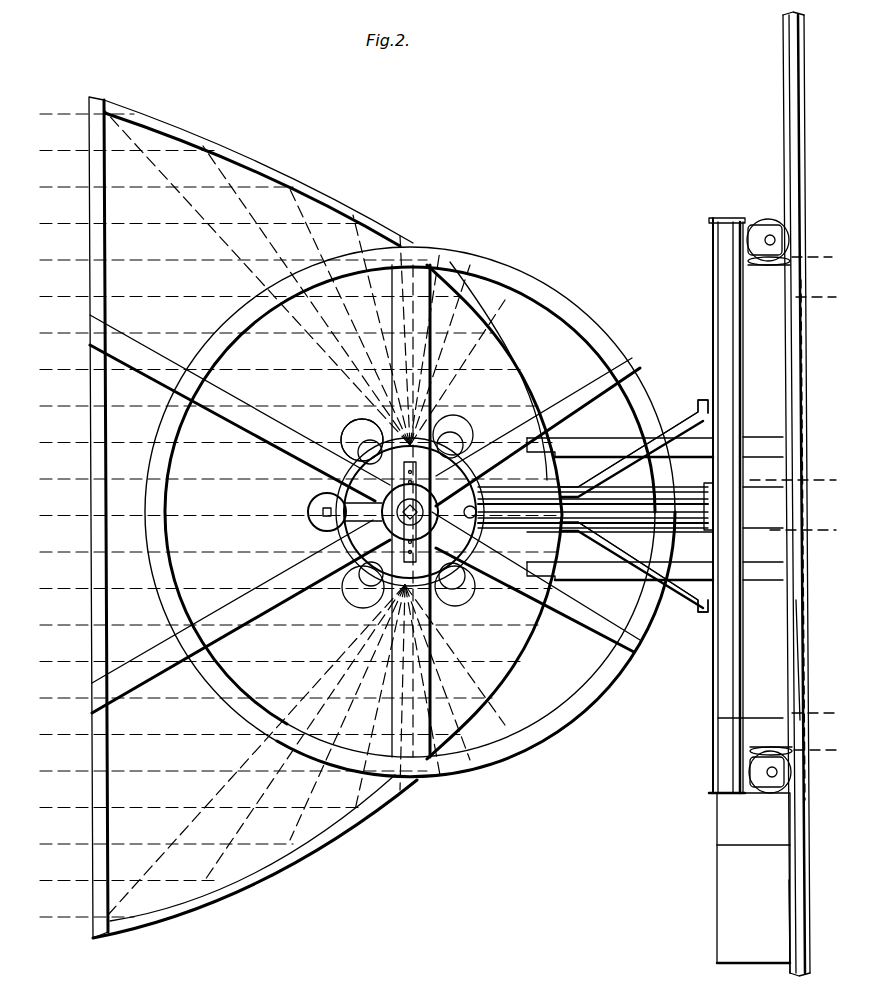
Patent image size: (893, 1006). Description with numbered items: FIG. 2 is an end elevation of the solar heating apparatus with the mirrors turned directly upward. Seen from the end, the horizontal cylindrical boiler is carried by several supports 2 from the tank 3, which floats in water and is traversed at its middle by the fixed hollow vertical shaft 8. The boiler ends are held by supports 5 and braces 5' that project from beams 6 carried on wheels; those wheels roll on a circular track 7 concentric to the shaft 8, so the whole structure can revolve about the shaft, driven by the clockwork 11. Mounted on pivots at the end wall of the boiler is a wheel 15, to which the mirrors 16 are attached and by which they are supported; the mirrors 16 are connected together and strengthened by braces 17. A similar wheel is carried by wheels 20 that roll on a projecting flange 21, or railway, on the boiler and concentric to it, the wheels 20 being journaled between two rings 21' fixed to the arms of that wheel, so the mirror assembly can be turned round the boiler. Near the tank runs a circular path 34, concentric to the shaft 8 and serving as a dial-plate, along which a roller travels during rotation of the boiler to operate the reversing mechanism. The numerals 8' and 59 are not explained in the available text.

The supports 2 is at (655, 577).
The tank 3 is at (799, 494).
The circular path 34 is at (790, 695).
The supports 5 is at (595, 506).
The braces 5' is at (643, 502).
The beams 6 is at (727, 505).
The circular track 7 is at (806, 906).
The vertical shaft 8 is at (791, 506).
The collar 8' is at (508, 529).
The clockwork 11 is at (753, 878).
The wheels 15 is at (466, 768).
The mirrors 16 is at (278, 170).
The braces 17 is at (106, 598).
The wheels 20 is at (460, 428).
The projecting flange 21 is at (365, 513).
The rings 21' is at (351, 440).
The hub 59 is at (396, 512).